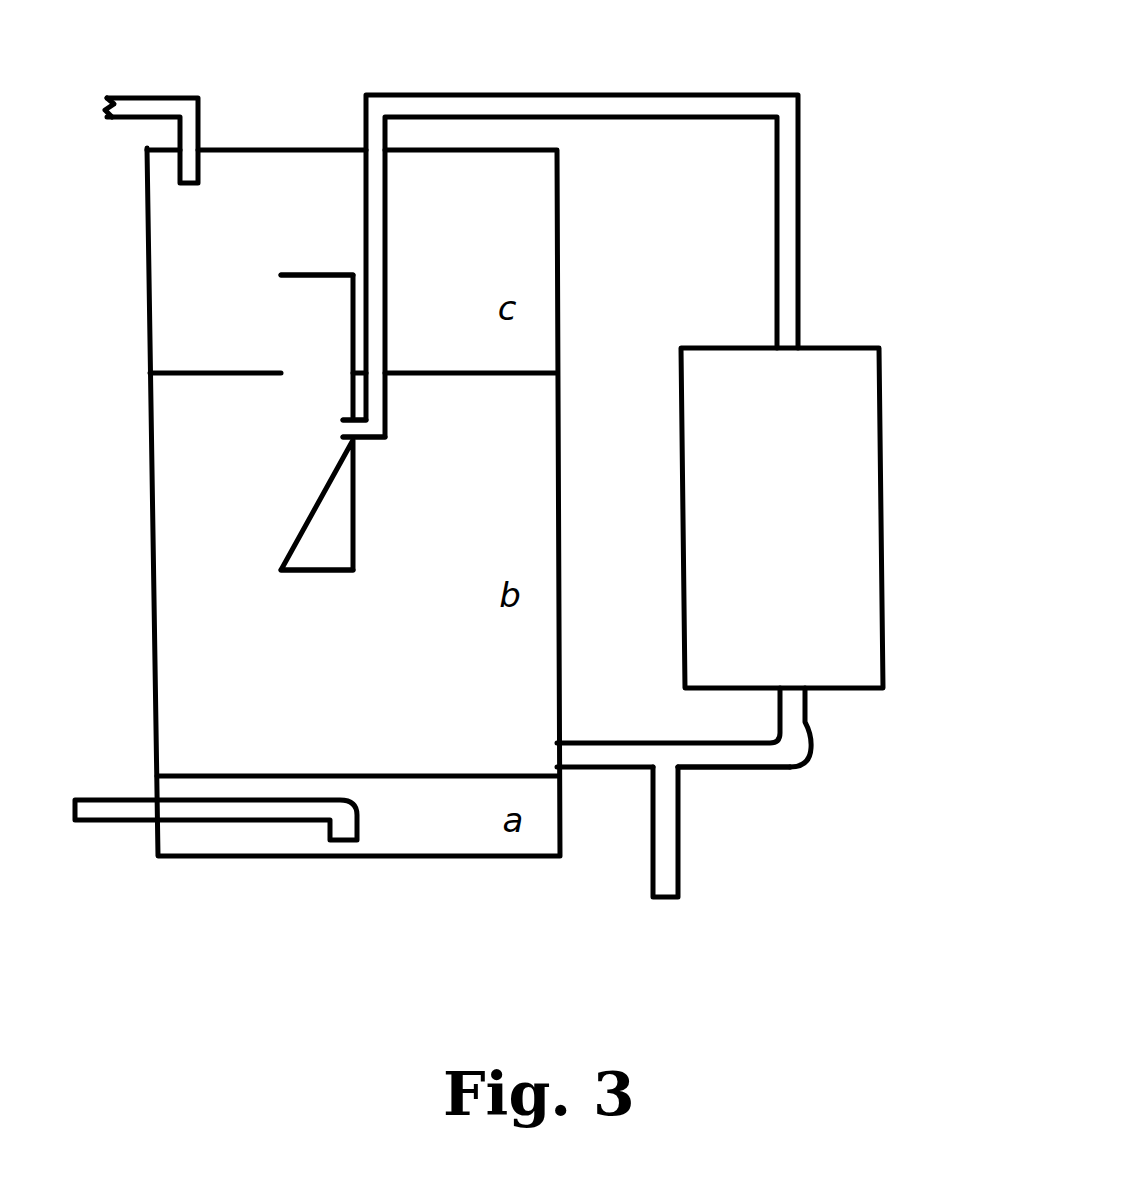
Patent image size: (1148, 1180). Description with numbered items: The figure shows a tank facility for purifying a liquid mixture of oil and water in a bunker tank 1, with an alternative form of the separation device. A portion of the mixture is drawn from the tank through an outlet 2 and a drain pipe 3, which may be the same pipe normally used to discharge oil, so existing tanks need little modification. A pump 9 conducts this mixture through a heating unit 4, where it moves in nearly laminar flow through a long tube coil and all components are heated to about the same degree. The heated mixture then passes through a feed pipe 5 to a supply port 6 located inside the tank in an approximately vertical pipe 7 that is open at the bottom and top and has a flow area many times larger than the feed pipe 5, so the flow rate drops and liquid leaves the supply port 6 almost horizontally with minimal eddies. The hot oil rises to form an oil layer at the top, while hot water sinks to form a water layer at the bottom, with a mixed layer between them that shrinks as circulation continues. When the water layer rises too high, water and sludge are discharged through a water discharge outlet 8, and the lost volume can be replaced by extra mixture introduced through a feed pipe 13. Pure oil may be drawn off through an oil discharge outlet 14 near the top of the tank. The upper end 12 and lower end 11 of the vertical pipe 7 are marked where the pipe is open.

The bunker tank 1 is at (558, 463).
The outlet 2 is at (556, 756).
The drain pipe 3 is at (718, 757).
The heating unit 4 is at (855, 576).
The feed pipe 5 is at (788, 238).
The supply port 6 is at (346, 428).
The pipe 7 is at (282, 500).
The water discharge outlet 8 is at (341, 843).
The pump 9 is at (820, 742).
The lower end of tube 11 is at (320, 572).
The upper end of tube 12 is at (315, 280).
The feed pipe 13 is at (680, 893).
The oil discharge outlet 14 is at (160, 100).